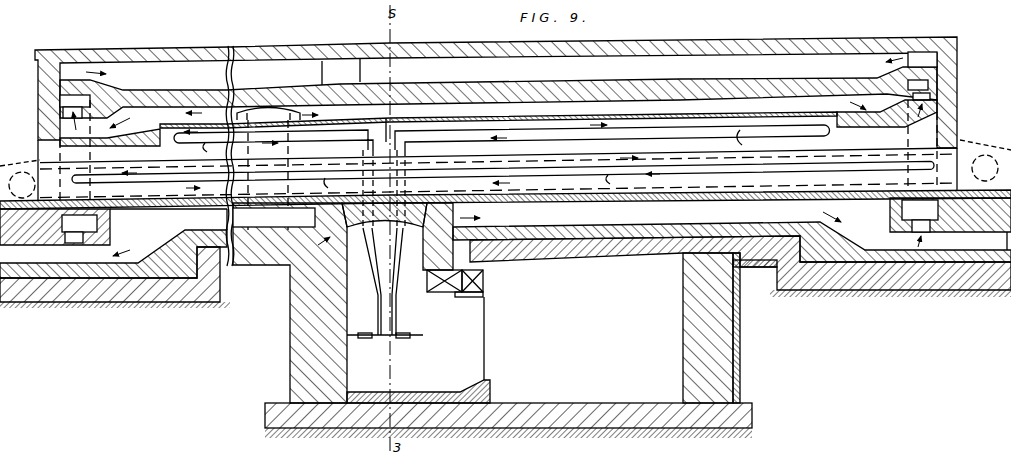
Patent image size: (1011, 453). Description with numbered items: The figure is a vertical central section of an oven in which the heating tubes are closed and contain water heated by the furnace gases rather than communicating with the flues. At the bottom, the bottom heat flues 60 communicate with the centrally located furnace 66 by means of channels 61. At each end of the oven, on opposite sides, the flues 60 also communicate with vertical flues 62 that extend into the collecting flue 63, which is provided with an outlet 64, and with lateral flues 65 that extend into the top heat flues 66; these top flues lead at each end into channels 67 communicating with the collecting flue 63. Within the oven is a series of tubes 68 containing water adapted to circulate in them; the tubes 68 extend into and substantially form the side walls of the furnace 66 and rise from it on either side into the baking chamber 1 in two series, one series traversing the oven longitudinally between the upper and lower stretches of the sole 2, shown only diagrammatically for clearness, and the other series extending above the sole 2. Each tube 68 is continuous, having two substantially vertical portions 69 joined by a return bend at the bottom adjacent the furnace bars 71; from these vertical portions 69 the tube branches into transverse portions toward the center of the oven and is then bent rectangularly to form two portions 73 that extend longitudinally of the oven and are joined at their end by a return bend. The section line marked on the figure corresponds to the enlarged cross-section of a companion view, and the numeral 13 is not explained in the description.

The baking chamber 1 is at (498, 148).
The sole 2 is at (772, 160).
The passage 13 is at (333, 187).
The bottom heat flues 60 is at (108, 255).
The channels 61 is at (282, 290).
The vertical flues 62 is at (75, 153).
The collecting flue 63 is at (496, 92).
The outlet 64 is at (335, 70).
The lateral flues 65 is at (288, 150).
The furnace 66 is at (498, 217).
The channels 67 is at (60, 101).
The tubes 68 is at (176, 142).
The vertical portions 69 is at (408, 190).
The furnace bars 71 is at (367, 340).
The longitudinal portions 73 is at (475, 160).